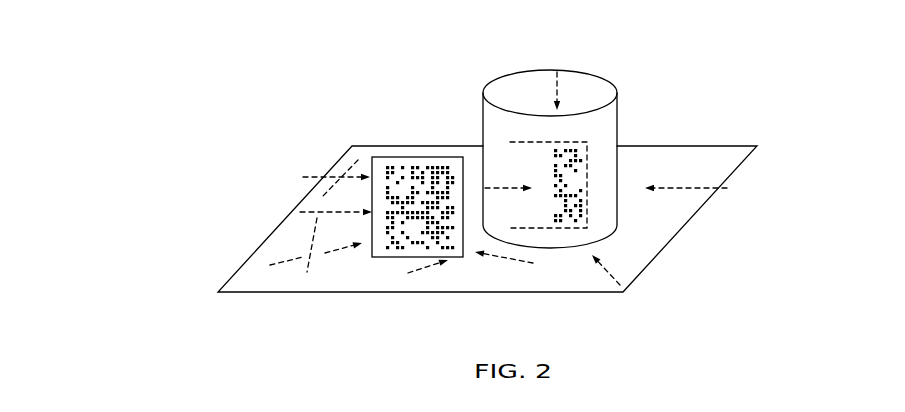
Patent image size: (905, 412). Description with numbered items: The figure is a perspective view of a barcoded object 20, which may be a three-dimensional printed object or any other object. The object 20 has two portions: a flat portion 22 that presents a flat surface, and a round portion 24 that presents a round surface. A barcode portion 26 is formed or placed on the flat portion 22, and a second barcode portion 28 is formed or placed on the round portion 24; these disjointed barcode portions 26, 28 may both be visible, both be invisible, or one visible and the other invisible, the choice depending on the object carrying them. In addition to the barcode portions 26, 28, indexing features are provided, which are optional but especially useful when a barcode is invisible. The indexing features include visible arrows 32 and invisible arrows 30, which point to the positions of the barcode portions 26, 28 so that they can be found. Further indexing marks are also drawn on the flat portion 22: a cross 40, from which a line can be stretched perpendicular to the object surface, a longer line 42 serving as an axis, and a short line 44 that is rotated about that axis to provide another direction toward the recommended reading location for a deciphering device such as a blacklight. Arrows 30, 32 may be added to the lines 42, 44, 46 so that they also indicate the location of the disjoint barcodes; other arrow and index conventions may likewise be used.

The object 20 is at (450, 184).
The flat portion 22 is at (715, 160).
The round portion 24 is at (600, 87).
The barcode portion 26 is at (413, 170).
The barcode portion 28 is at (577, 165).
The invisible arrows 30 is at (494, 187).
The visible arrows 32 is at (557, 88).
The cross 40 is at (345, 176).
The longer line 42 is at (303, 257).
The short line 44 is at (313, 237).
The line 46 is at (355, 162).